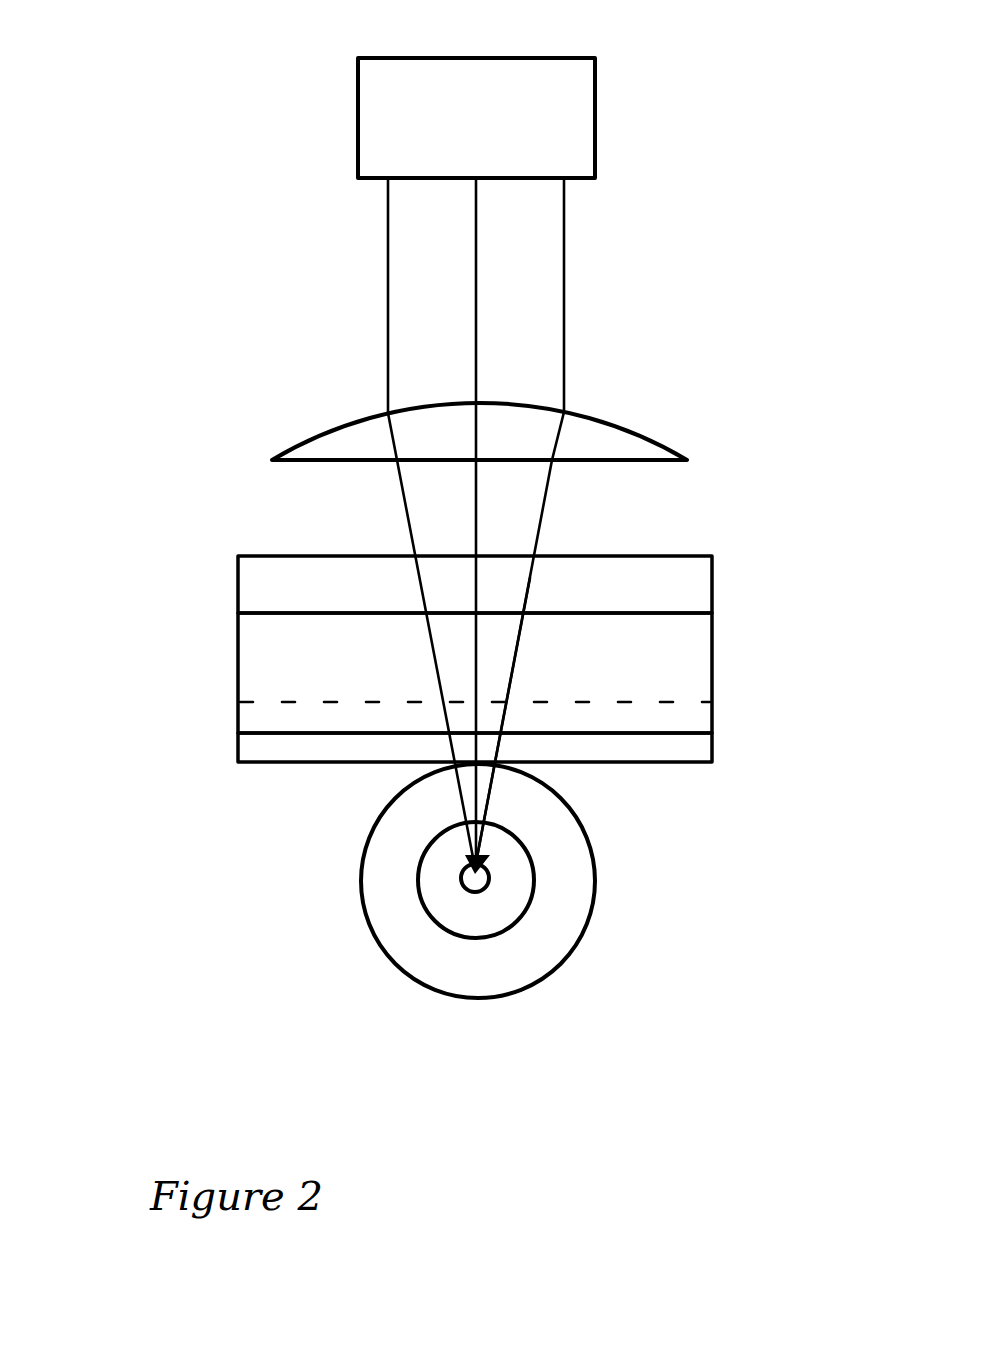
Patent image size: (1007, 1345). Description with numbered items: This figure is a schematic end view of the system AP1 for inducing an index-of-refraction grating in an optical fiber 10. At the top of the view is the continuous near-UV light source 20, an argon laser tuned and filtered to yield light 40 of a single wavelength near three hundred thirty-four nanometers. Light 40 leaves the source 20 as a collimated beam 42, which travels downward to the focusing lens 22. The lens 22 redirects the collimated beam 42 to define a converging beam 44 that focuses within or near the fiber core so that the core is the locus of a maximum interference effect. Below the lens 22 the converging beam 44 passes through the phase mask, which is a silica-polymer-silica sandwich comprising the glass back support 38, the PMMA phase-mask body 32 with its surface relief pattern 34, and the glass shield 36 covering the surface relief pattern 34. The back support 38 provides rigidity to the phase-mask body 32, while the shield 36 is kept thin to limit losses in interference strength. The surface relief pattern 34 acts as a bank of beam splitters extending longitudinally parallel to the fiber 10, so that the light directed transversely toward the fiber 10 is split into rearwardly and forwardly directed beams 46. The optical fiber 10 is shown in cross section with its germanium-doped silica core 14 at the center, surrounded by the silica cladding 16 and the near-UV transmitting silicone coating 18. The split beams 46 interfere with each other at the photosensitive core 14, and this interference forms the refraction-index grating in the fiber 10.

The system for inducing an index-of-refraction grating AP1 is at (240, 106).
The optical fiber 10 is at (400, 997).
The core 14 is at (492, 878).
The cladding 16 is at (469, 924).
The coating 18 is at (386, 849).
The near-UV light source 20 is at (462, 158).
The focusing lens 22 is at (344, 451).
The phase-mask body 32 is at (283, 661).
The surface relief pattern 34 is at (226, 705).
The glass shield 36 is at (238, 753).
The glass back support 38 is at (278, 599).
The light 40 is at (586, 266).
The collimated beam 42 is at (388, 308).
The converging beam 44 is at (408, 525).
The rearwardly and forwardly directed beams 46 is at (495, 785).